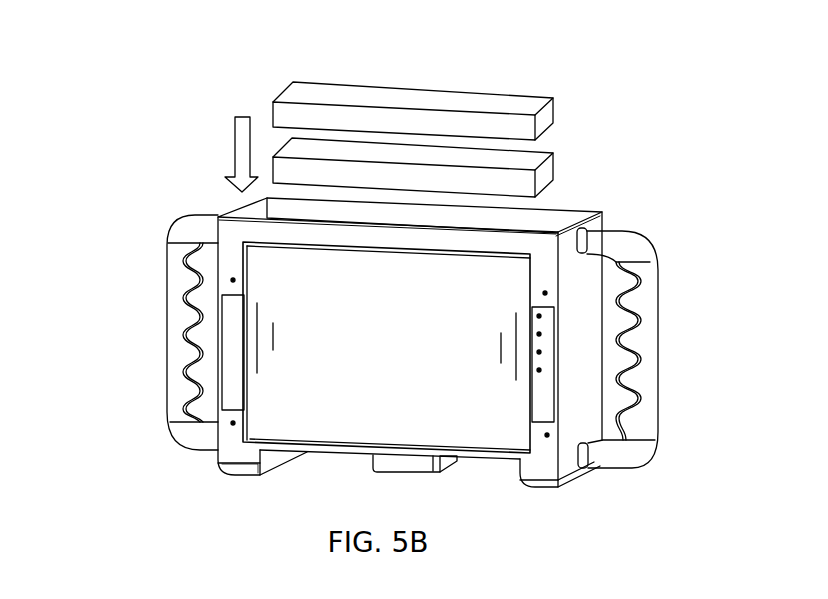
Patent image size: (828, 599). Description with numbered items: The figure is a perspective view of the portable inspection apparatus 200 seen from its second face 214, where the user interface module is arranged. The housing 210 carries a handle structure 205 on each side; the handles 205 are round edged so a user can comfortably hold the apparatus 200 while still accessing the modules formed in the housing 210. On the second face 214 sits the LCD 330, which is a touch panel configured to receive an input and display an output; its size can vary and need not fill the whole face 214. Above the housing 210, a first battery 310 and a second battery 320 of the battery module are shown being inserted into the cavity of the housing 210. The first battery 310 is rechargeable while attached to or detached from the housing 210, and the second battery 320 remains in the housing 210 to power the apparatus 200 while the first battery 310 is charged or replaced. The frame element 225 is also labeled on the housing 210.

The portable inspection apparatus 200 is at (392, 265).
The handle structure 205 is at (173, 305).
The housing 210 is at (232, 458).
The second face 214 is at (233, 245).
The frame body / housing 225 is at (557, 212).
The first battery 310 is at (488, 105).
The second battery 320 is at (550, 175).
The LCD 330 is at (409, 363).